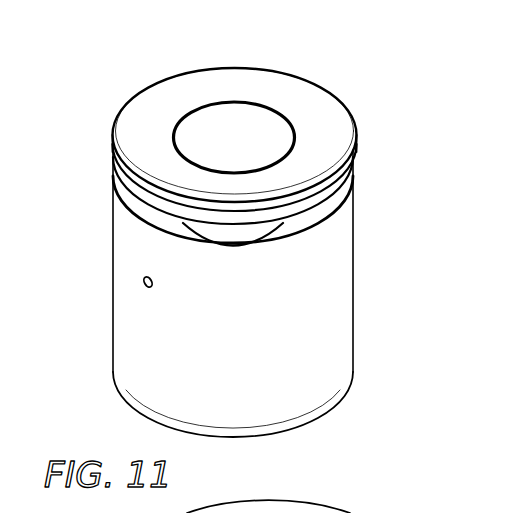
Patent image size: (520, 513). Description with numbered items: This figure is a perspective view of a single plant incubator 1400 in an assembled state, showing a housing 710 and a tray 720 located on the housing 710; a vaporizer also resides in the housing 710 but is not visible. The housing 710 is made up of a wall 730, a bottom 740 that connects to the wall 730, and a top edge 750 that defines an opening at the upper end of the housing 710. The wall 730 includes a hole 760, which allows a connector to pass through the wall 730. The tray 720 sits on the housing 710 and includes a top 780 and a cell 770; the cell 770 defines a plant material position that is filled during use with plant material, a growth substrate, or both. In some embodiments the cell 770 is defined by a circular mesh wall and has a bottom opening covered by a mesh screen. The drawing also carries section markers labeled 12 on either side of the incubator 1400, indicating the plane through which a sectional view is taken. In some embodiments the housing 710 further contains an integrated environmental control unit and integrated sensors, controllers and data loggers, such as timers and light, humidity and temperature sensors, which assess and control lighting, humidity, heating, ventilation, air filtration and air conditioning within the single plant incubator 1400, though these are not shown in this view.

The single plant incubator 1400 is at (77, 51).
The section line for FIG. 12 is at (107, 187).
The housing 710 is at (244, 299).
The tray 720 is at (213, 114).
The wall 730 is at (354, 250).
The bottom 740 is at (317, 417).
The top edge 750 is at (354, 190).
The hole 760 is at (143, 291).
The cell 770 is at (207, 132).
The top 780 is at (172, 98).